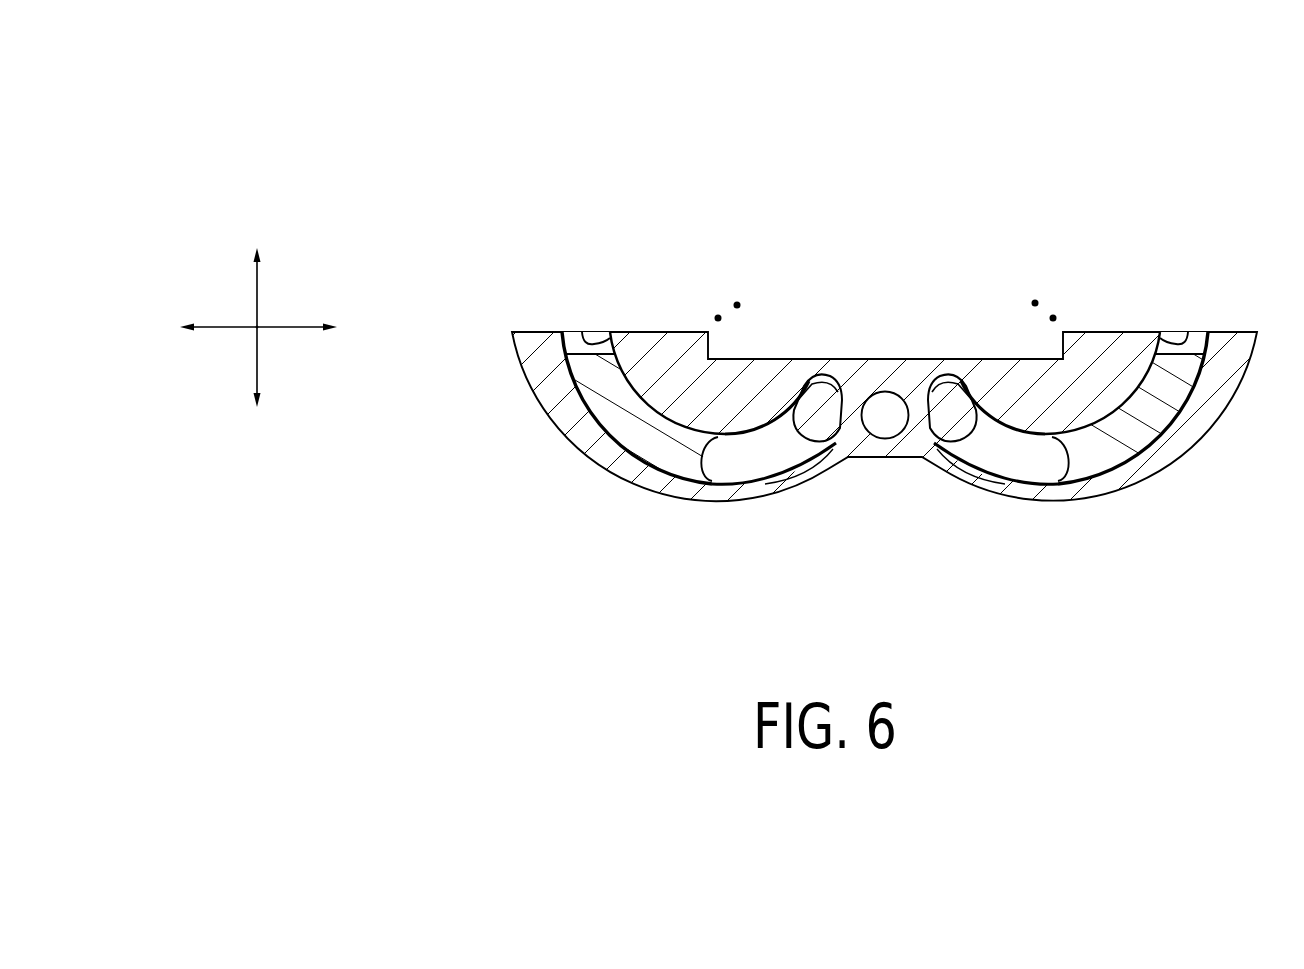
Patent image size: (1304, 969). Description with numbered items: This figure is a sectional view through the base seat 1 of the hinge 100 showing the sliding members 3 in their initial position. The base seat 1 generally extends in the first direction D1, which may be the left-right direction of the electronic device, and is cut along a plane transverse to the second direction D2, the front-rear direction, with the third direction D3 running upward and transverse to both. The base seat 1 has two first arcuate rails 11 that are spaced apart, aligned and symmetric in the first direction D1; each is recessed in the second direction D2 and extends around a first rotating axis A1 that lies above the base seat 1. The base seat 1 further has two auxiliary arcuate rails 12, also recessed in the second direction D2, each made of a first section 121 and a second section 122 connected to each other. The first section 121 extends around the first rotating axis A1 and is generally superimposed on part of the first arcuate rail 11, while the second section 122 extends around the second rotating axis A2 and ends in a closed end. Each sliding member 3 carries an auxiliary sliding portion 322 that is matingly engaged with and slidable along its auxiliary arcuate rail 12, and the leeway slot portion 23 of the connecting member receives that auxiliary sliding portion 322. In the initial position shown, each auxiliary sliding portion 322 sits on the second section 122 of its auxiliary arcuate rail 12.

The hinge 100 is at (435, 99).
The base seat 1 is at (884, 480).
The first arcuate rail 11 is at (1001, 414).
The auxiliary arcuate rail 12 is at (665, 413).
The first section 121 is at (590, 342).
The second section 122 is at (830, 373).
The leeway slot portion 23 is at (698, 463).
The auxiliary sliding portion 322 is at (817, 417).
The sliding member 3 is at (884, 352).
The first rotating axis A1 is at (738, 302).
The second rotating axis A2 is at (716, 315).
The first direction D1 is at (278, 329).
The second direction D2 is at (276, 313).
The third direction D3 is at (258, 313).